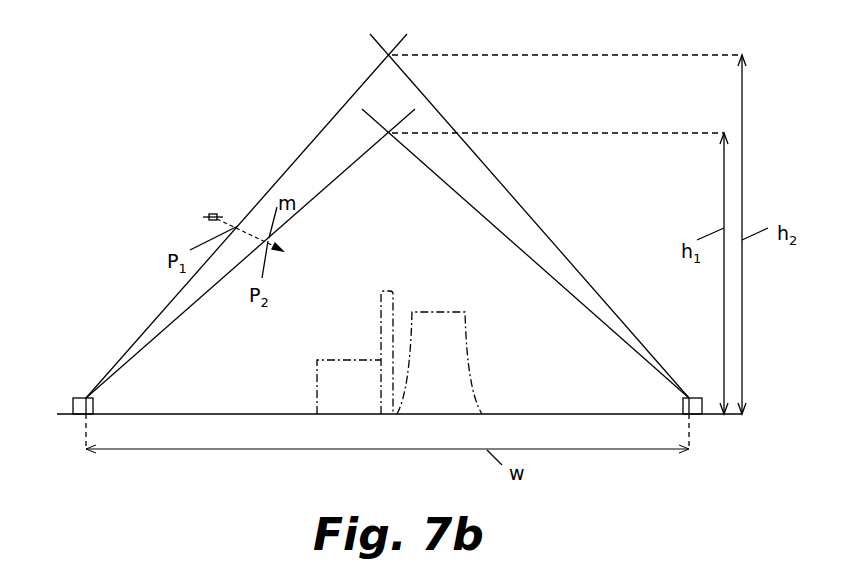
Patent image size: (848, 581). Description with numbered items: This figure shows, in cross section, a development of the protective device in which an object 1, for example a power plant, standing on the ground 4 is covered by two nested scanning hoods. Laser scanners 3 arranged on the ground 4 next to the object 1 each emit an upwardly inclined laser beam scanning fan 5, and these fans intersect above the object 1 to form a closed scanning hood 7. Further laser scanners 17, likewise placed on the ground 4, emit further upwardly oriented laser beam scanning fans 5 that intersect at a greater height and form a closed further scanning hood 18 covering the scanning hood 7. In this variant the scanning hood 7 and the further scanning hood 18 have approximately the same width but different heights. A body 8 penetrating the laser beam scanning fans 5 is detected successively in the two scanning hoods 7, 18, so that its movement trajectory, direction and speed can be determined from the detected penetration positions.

The object 1 is at (385, 322).
The laser scanner 3 is at (86, 414).
The ground 4 is at (215, 412).
The laser beam scanning fan 5 is at (323, 125).
The scanning hood 7 is at (395, 255).
The body 8 is at (209, 212).
The further laser scanner 17 is at (80, 412).
The further scanning hood 18 is at (347, 158).